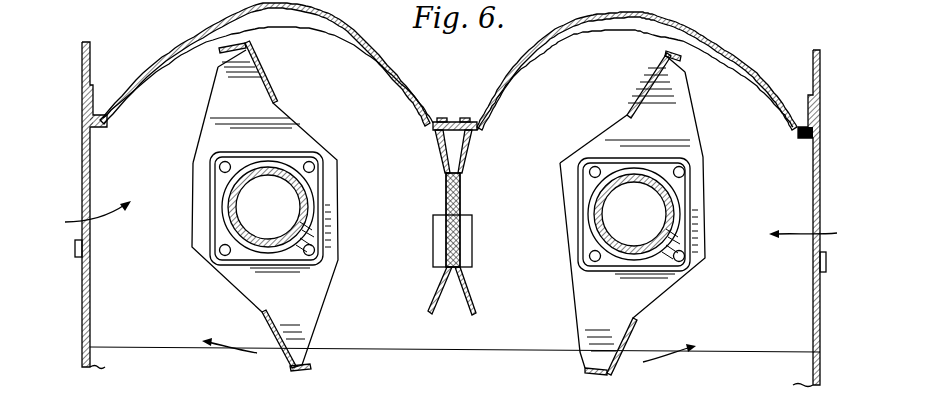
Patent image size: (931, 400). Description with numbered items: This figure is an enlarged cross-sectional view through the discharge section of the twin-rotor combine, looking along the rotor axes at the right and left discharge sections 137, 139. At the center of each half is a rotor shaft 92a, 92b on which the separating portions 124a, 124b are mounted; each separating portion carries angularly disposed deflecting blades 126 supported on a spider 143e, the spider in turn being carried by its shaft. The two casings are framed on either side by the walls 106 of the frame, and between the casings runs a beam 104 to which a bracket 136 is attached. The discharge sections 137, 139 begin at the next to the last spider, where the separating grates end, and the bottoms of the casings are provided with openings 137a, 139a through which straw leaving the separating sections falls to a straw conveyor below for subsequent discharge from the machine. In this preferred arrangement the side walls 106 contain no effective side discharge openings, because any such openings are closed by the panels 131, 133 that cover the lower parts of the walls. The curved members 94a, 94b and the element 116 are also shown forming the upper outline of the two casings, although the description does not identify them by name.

The left cover shell 94a is at (358, 33).
The right cover shell 94b is at (762, 70).
The inner liner of shell 116 is at (147, 71).
The wall 106 is at (82, 163).
The panel 131 is at (80, 312).
The panel 133 is at (818, 325).
The right discharge section 137 is at (83, 216).
The left discharge section 139 is at (818, 235).
The spider 143e is at (223, 93).
The separating portion 124a is at (299, 108).
The separating portion 124b is at (713, 145).
The deflecting blade 126 is at (263, 78).
The shaft 92a is at (300, 194).
The shaft 92b is at (593, 204).
The beam 104 is at (468, 160).
The bracket 136 is at (460, 247).
The opening 137a is at (377, 293).
The opening 139a is at (720, 300).